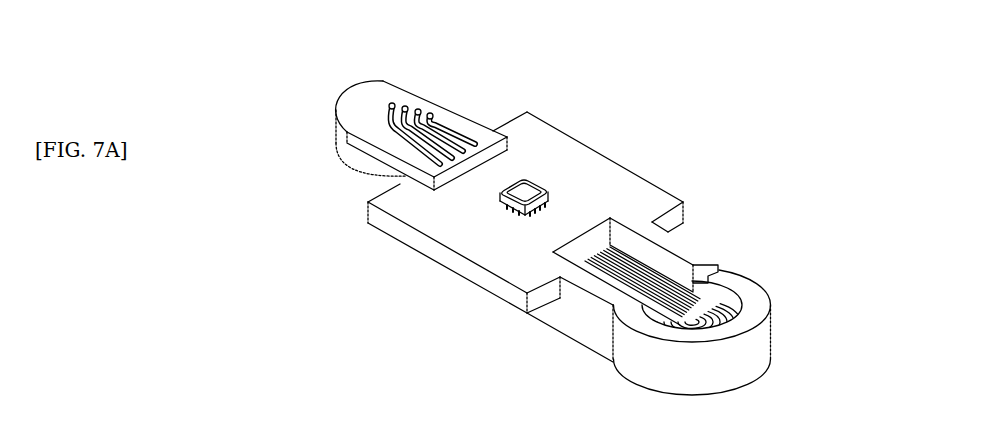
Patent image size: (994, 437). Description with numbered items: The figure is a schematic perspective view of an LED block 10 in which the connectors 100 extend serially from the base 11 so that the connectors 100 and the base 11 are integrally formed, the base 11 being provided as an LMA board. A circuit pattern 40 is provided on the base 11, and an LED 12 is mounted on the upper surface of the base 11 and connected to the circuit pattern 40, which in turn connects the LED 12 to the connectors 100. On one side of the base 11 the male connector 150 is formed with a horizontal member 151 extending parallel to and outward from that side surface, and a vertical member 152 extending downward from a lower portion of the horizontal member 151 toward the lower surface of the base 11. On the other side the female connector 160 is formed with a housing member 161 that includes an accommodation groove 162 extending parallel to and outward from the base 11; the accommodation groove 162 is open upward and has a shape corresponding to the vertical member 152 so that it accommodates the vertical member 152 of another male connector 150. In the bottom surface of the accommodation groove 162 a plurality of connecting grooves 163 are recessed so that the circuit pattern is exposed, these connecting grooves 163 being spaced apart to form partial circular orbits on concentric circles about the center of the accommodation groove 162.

The LED block 10 is at (669, 123).
The base 11 is at (636, 192).
The LED 12 is at (527, 188).
The circuit pattern 40 is at (444, 130).
The connector 100 is at (549, 219).
The male connector 150 is at (334, 82).
The horizontal member 151 is at (399, 92).
The vertical member 152 is at (357, 160).
The female connector 160 is at (609, 381).
The housing member 161 is at (743, 353).
The accommodation groove 162 is at (698, 273).
The connecting grooves 163 is at (717, 303).